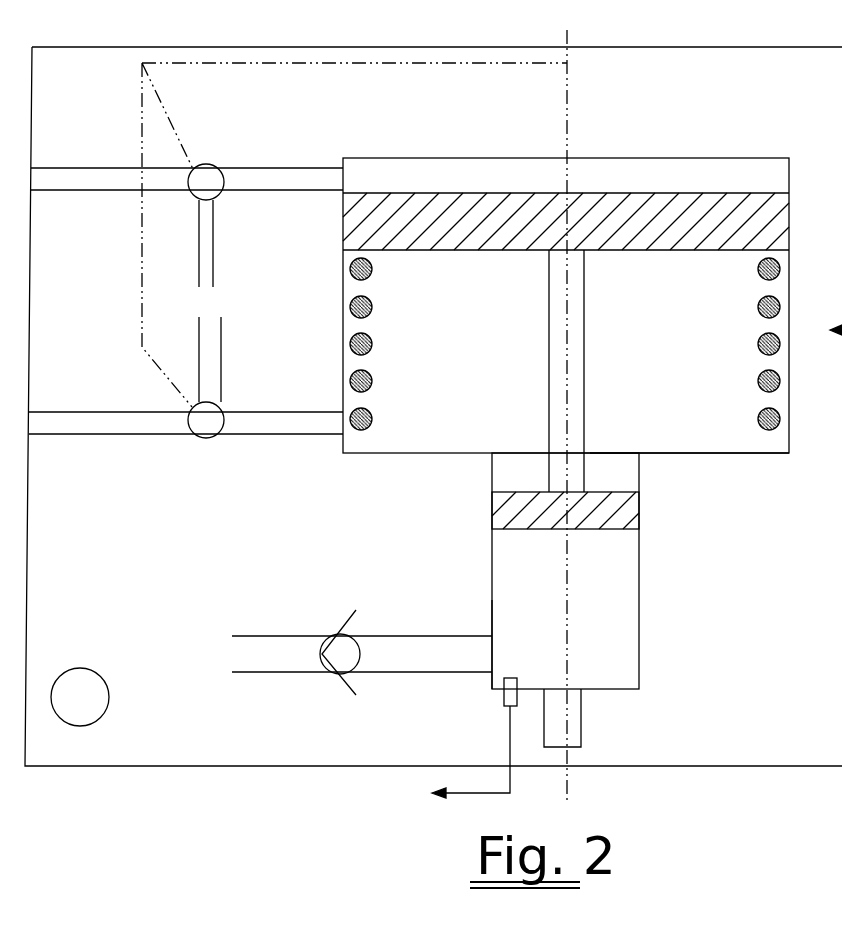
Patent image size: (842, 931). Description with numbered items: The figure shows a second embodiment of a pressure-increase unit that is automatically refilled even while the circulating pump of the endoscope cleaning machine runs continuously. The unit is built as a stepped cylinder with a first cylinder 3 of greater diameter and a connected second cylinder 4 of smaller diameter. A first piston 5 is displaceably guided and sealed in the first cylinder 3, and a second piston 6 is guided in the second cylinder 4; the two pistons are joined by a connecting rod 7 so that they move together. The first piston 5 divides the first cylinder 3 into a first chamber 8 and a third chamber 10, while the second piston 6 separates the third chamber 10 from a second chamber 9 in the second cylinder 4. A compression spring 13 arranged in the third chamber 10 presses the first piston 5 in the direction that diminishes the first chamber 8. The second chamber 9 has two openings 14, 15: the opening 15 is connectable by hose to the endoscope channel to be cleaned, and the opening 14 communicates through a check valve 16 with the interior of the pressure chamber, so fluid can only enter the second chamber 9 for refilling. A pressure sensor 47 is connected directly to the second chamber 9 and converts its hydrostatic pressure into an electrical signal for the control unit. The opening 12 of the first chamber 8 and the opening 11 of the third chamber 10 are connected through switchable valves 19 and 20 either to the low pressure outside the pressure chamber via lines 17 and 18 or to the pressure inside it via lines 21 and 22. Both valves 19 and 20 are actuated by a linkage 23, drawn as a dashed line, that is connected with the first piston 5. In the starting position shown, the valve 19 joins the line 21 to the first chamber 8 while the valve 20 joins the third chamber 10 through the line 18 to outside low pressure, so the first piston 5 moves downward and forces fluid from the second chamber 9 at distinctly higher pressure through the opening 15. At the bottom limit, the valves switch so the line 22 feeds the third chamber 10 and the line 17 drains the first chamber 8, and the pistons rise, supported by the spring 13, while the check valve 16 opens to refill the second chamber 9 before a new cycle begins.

The first cylinder 3 is at (718, 158).
The second cylinder 4 is at (640, 600).
The first piston 5 is at (428, 227).
The second piston 6 is at (508, 513).
The connecting rod 7 is at (584, 368).
The first chamber 8 is at (515, 186).
The second chamber 9 is at (607, 645).
The third chamber 10 is at (678, 417).
The opening 11 is at (328, 424).
The opening 12 is at (312, 180).
The compression spring 13 is at (373, 340).
The opening 14 is at (472, 665).
The opening 15 is at (570, 728).
The check valve 16 is at (330, 640).
The line 17 is at (90, 182).
The line 18 is at (88, 428).
The switchable valve 19 is at (210, 186).
The switchable valve 20 is at (212, 424).
The line 21 is at (200, 258).
The line 22 is at (210, 346).
The linkage 23 is at (137, 240).
The pressure sensor 47 is at (508, 694).